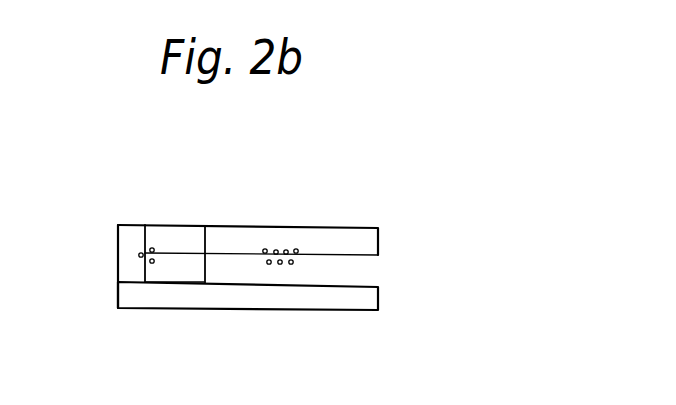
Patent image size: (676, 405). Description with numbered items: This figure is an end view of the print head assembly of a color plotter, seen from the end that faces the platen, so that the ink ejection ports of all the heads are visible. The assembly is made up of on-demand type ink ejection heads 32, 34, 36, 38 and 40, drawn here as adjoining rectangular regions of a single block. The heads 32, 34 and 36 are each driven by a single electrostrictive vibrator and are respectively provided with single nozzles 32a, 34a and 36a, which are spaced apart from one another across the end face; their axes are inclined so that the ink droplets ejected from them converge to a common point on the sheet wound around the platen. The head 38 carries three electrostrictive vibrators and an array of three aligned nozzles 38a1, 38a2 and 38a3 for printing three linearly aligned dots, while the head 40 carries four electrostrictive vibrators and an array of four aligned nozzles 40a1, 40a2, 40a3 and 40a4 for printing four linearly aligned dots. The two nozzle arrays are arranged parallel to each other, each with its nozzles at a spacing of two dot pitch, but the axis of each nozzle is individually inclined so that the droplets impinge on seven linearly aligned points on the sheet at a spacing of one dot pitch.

The ink ejection head 32 is at (180, 272).
The nozzle 32a is at (152, 263).
The ink ejection head 34 is at (118, 266).
The nozzle 34a is at (141, 253).
The ink ejection head 36 is at (192, 232).
The nozzle 36a is at (152, 248).
The ink ejection head 38 is at (372, 275).
The nozzle 38a1 is at (268, 264).
The nozzle 38a2 is at (280, 264).
The nozzle 38a3 is at (293, 263).
The ink ejection head 40 is at (372, 243).
The nozzle 40a1 is at (264, 249).
The nozzle 40a2 is at (276, 250).
The nozzle 40a3 is at (287, 250).
The nozzle 40a4 is at (298, 251).